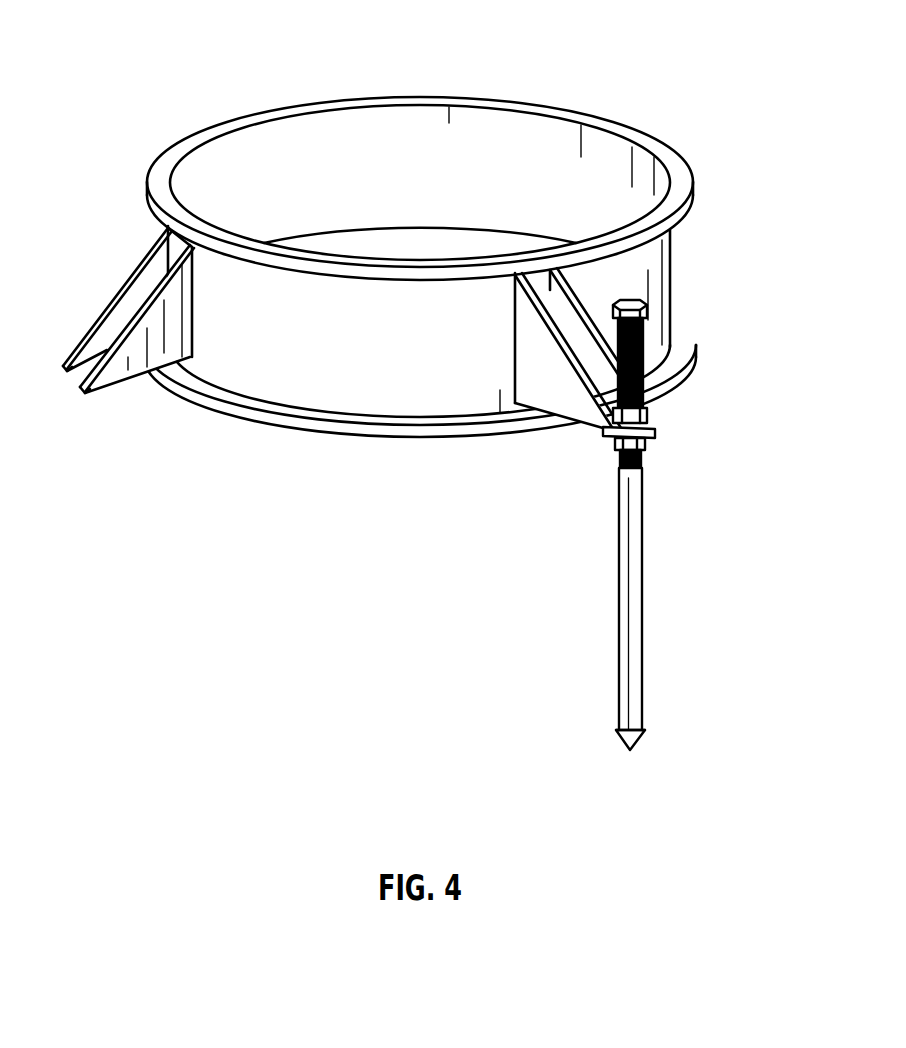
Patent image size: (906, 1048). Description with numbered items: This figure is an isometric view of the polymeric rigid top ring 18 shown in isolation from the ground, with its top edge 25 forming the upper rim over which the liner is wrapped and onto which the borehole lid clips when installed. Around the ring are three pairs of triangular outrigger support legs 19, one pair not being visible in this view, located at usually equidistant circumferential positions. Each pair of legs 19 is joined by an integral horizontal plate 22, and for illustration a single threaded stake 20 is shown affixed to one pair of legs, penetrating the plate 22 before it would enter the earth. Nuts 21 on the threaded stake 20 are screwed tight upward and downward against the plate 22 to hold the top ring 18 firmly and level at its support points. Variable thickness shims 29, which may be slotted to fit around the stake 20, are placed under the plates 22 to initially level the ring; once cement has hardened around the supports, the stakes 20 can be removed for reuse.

The top ring 18 is at (653, 325).
The triangular outrigger support legs 19 is at (526, 343).
The threaded stake 20 is at (617, 350).
The nuts 21 is at (652, 437).
The horizontal plate 22 is at (607, 412).
The top edge 25 is at (466, 92).
The shims 29 is at (612, 440).